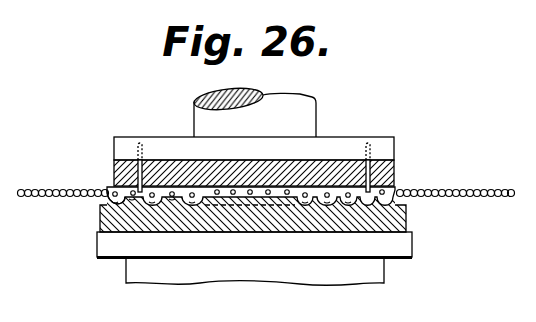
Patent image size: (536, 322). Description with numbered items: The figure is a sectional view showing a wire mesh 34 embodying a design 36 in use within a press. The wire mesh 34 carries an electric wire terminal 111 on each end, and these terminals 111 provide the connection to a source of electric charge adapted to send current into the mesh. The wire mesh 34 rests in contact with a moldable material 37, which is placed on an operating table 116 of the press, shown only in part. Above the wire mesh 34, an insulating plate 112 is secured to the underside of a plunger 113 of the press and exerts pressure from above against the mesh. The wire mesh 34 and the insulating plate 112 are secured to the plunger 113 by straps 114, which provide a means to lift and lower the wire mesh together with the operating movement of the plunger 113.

The electric wire terminal 111 is at (58, 187).
The insulating plate 112 is at (388, 173).
The plunger 113 is at (338, 145).
The strap 114 is at (143, 160).
The operating table 116 is at (400, 247).
The wire mesh 34 is at (115, 192).
The design 36 is at (242, 203).
The moldable material 37 is at (396, 220).